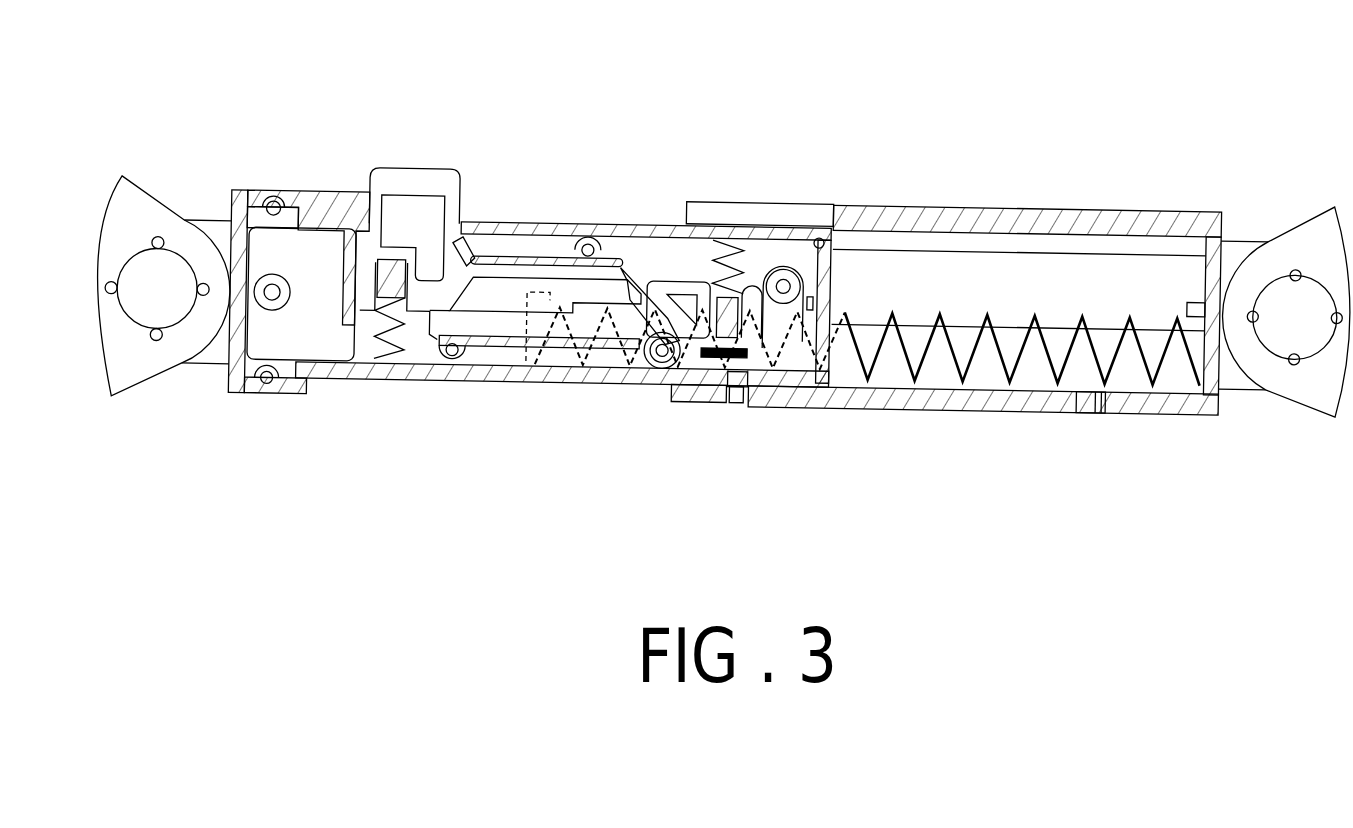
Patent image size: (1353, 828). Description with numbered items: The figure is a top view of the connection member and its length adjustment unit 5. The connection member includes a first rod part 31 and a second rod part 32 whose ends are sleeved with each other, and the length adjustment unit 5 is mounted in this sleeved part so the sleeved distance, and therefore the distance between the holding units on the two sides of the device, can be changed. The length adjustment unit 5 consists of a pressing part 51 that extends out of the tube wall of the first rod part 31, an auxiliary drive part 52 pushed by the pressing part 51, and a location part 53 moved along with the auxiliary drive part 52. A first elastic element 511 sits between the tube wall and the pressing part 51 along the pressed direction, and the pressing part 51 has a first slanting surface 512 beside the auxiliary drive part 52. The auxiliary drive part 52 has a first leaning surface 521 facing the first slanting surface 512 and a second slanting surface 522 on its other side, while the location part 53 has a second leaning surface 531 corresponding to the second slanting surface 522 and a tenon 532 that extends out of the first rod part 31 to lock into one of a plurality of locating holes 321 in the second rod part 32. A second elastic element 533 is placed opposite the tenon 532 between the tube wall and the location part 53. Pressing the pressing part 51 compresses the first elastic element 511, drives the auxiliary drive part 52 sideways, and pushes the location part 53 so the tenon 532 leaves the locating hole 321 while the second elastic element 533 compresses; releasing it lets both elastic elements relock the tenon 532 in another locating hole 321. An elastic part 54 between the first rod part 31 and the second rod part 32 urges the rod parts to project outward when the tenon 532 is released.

The length adjustment unit 5 is at (610, 497).
The first rod part 31 is at (314, 186).
The second rod part 32 is at (1028, 200).
The locating hole 321 is at (738, 405).
The pressing part 51 is at (410, 183).
The first elastic element 511 is at (400, 348).
The first slanting surface 512 is at (455, 268).
The auxiliary drive part 52 is at (537, 273).
The first leaning surface 521 is at (475, 375).
The second slanting surface 522 is at (641, 268).
The location part 53 is at (718, 378).
The second leaning surface 531 is at (675, 375).
The tenon 532 is at (820, 407).
The second elastic element 533 is at (742, 262).
The elastic part 54 is at (1025, 365).